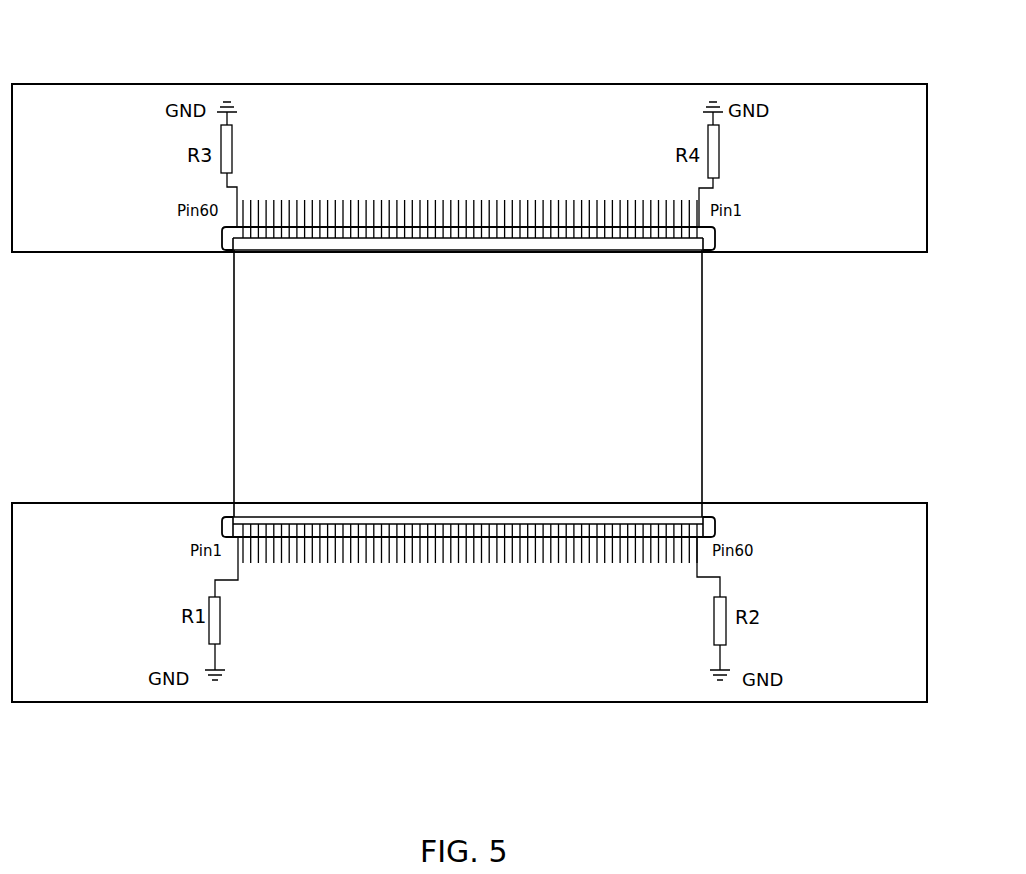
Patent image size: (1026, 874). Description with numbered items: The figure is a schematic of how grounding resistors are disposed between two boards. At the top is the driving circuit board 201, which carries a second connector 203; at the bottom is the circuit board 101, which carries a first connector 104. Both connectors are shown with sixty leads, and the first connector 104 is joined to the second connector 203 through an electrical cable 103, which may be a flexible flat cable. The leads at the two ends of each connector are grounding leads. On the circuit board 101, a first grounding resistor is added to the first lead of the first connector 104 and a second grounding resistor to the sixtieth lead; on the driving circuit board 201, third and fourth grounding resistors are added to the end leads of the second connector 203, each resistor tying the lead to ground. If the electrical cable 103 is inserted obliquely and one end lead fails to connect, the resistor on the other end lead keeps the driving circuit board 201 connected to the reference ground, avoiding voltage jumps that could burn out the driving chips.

The driving circuit board 201 is at (587, 84).
The circuit board 101 is at (440, 703).
The second connector 203 is at (710, 243).
The first connector 104 is at (715, 530).
The electrical cable 103 is at (234, 370).